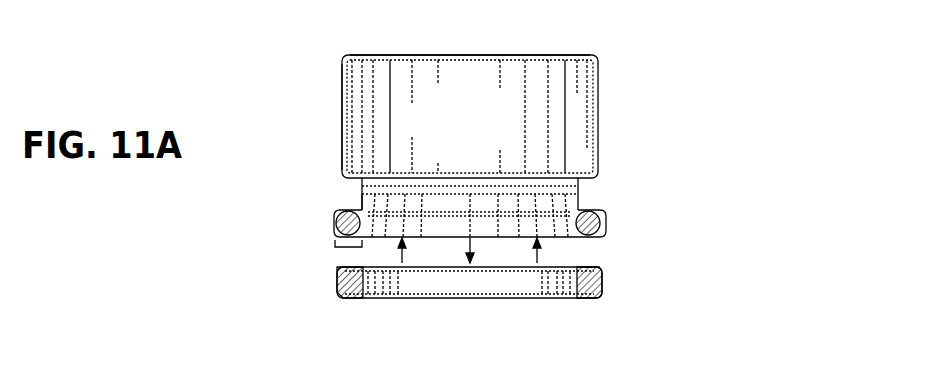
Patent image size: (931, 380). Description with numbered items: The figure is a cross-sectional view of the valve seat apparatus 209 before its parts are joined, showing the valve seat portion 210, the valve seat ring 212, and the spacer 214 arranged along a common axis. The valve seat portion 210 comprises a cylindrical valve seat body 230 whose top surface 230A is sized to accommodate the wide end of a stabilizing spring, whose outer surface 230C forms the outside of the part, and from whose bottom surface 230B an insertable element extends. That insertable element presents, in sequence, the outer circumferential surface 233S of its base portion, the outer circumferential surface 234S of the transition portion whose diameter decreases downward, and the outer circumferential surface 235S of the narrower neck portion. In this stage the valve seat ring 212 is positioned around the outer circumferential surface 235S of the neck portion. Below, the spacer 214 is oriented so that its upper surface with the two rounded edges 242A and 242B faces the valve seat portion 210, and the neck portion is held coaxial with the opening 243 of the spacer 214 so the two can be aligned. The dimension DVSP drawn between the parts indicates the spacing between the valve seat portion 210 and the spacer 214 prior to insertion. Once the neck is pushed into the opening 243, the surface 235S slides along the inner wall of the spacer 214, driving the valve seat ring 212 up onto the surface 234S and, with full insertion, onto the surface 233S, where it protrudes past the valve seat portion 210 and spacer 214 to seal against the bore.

The valve seat apparatus 209 is at (798, 42).
The valve seat portion 210 is at (614, 70).
The valve seat ring 212 is at (610, 222).
The spacer 214 is at (612, 280).
The valve seat body 230 is at (357, 85).
The top surface of the valve seat body 230A is at (362, 56).
The bottom surface of the valve seat body 230B is at (350, 183).
The outer surface of the valve seat portion 230C is at (340, 132).
The outer circumferential surface of the base portion 233S is at (360, 196).
The outer circumferential surface of the transitional portion 234S is at (337, 223).
The outer circumferential surface of the neck portion 235S is at (368, 268).
The rounded edge 242A is at (582, 265).
The rounded edge 242B is at (593, 266).
The opening of the spacer 243 is at (469, 292).
The valve seat spacing distance DVSP is at (355, 247).